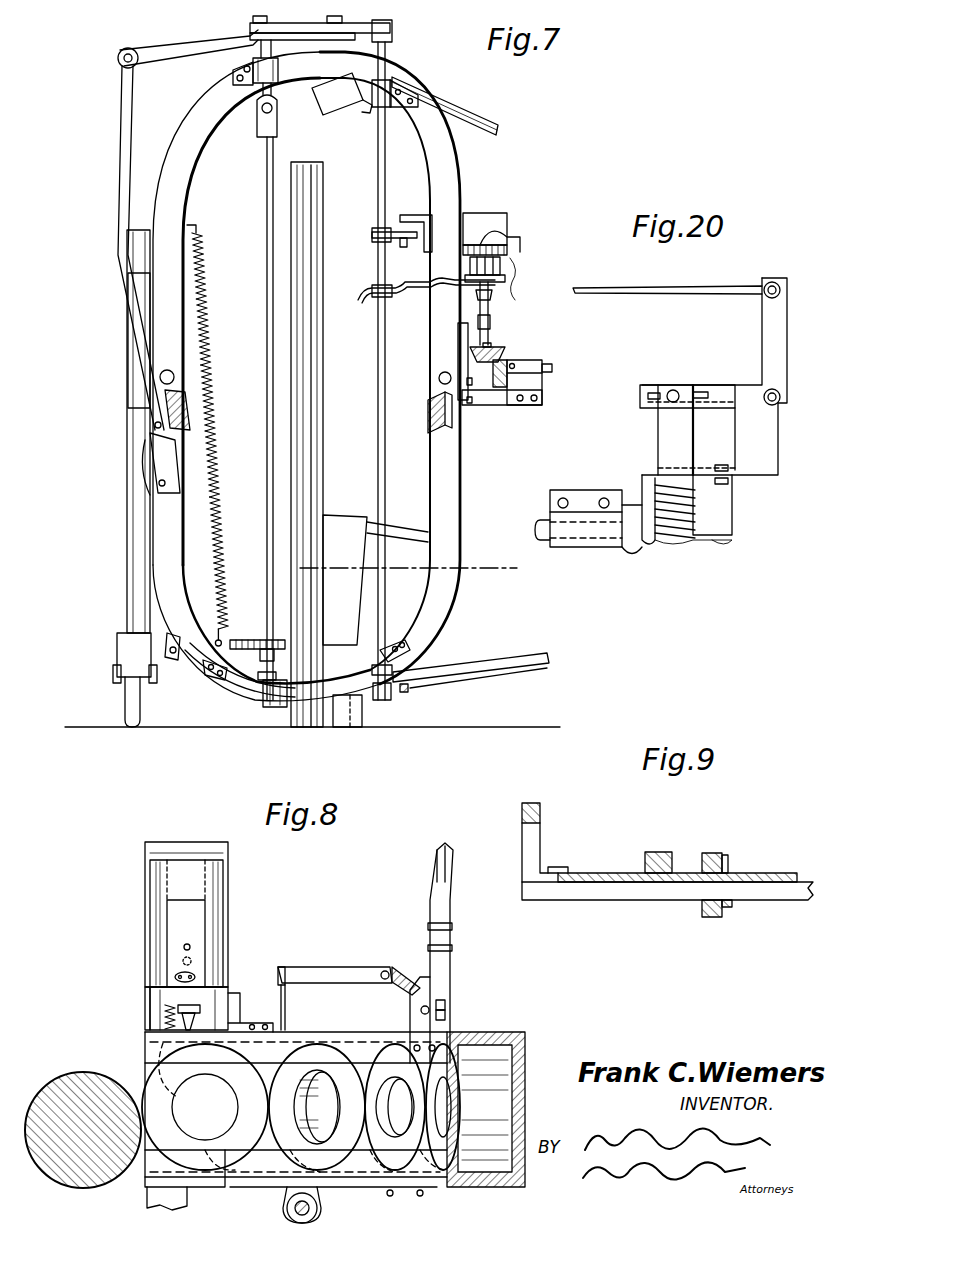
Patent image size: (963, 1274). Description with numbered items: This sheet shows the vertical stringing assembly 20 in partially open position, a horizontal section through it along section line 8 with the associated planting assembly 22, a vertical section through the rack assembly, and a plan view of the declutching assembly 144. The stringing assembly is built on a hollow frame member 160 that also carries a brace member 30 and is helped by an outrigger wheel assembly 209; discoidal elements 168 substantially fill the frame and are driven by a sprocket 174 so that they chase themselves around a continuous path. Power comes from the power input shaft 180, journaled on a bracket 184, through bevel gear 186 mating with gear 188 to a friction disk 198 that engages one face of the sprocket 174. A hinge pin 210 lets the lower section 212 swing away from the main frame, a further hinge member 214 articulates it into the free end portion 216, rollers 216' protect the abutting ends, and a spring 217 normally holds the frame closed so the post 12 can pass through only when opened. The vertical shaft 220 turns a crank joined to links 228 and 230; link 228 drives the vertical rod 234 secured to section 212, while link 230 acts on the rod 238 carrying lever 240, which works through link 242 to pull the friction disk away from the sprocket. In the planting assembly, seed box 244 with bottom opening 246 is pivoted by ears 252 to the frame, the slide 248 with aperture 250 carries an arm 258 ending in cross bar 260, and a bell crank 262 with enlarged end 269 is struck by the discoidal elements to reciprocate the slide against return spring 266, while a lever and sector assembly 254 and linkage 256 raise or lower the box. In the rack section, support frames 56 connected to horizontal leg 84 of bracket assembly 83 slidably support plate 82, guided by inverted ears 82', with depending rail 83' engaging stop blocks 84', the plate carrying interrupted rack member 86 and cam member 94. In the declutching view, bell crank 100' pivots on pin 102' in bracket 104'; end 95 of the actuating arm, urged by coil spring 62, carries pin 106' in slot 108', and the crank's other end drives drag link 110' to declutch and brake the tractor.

In FIG. 7, the post 12 is at (320, 162).
In FIG. 8, the post 12 is at (65, 1072).
In FIG. 7, the vertical stringing assembly 20 is at (465, 493).
In FIG. 7, the brace member 30 is at (186, 400).
In FIG. 7, the section line 8— 8 is at (303, 640).
In FIG. 7, the sprocket 174 is at (505, 275).
In FIG. 7, the power input shaft 180 is at (552, 369).
In FIG. 7, the bracket 184 is at (508, 405).
In FIG. 7, the bevel gear 186 is at (505, 363).
In FIG. 7, the bevel gear 188 is at (493, 348).
In FIG. 7, the friction disk 198 is at (507, 240).
In FIG. 7, the outrigger wheel assembly 209 is at (122, 572).
In FIG. 7, the hinge pin 210 is at (156, 427).
In FIG. 7, the lower section of frame 212 is at (162, 585).
In FIG. 7, the hinge member 214 is at (175, 655).
In FIG. 7, the free end portion of frame 216 is at (232, 678).
In FIG. 7, the rollers 216' is at (293, 713).
In FIG. 7, the spring or tension member 217 is at (205, 273).
In FIG. 7, the vertical shaft 220 is at (262, 310).
In FIG. 7, the link member 228 is at (191, 45).
In FIG. 7, the link member 230 is at (318, 34).
In FIG. 7, the vertical rod 234 is at (120, 175).
In FIG. 7, the rod 238 is at (378, 433).
In FIG. 8, the rod 238 is at (294, 1208).
In FIG. 7, the lever 240 is at (370, 290).
In FIG. 7, the link 242 is at (412, 293).
In FIG. 20, the drag link 110' is at (667, 269).
In FIG. 20, the declutching assembly 144 is at (757, 358).
In FIG. 20, the bell crank 100' is at (739, 340).
In FIG. 20, the pin 102' is at (798, 387).
In FIG. 20, the bracket 104' is at (734, 439).
In FIG. 20, the pin 106' is at (682, 383).
In FIG. 20, the slot 108' is at (717, 378).
In FIG. 20, the end of actuating arm 95 is at (682, 428).
In FIG. 20, the coil spring 62 is at (707, 503).
In FIG. 9, the support frames 56 is at (662, 893).
In FIG. 9, the plate member 82 is at (677, 851).
In FIG. 9, the inverted L-shaped ears 82' is at (577, 848).
In FIG. 9, the bracket assembly 83 is at (569, 838).
In FIG. 9, the depending rail member 83' is at (717, 926).
In FIG. 9, the horizontal leg 84 is at (548, 802).
In FIG. 9, the stop blocks 84' is at (752, 913).
In FIG. 9, the interrupted rack member 86 is at (717, 853).
In FIG. 9, the cam member 94 is at (663, 858).
In FIG. 8, the planting assembly 22 is at (243, 892).
In FIG. 8, the seed box 244 is at (228, 930).
In FIG. 8, the opening 246 is at (176, 962).
In FIG. 8, the slide member 248 is at (195, 958).
In FIG. 8, the aperture 250 is at (182, 947).
In FIG. 8, the forwardly extending ears 252 is at (145, 1000).
In FIG. 8, the lever and sector assembly 254 is at (415, 965).
In FIG. 8, the linkage assembly 256 is at (327, 958).
In FIG. 8, the forwardly extending arm 258 is at (238, 995).
In FIG. 8, the cross bar 260 is at (180, 1013).
In FIG. 8, the bell crank member 262 is at (197, 1030).
In FIG. 8, the return spring 266 is at (152, 1027).
In FIG. 8, the enlarged end of bell crank 269 is at (205, 1107).
In FIG. 8, the hollow frame member 160 is at (347, 1040).
In FIG. 8, the discoidal elements 168 is at (348, 1137).